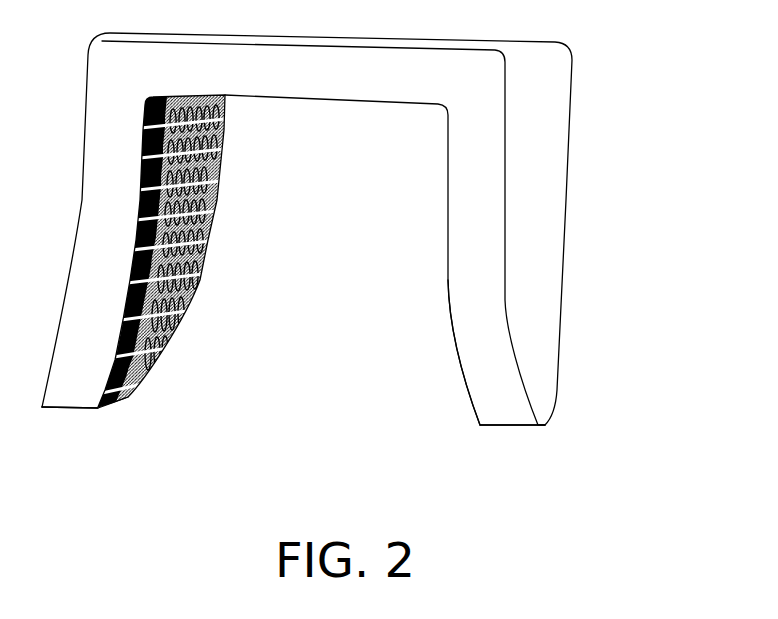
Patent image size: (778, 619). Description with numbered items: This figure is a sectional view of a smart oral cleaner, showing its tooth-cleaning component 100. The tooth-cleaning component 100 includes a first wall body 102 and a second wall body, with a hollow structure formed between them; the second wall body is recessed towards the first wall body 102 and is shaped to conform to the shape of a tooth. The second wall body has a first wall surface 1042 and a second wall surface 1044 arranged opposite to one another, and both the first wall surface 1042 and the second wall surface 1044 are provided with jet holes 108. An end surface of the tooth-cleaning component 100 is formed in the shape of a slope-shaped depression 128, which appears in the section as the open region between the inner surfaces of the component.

The tooth-cleaning component 100 is at (584, 190).
The first wall body 102 is at (537, 323).
The jet holes 108 is at (210, 228).
The slope-shaped depression 128 is at (297, 238).
The first wall surface 1042 is at (145, 363).
The second wall surface 1044 is at (467, 373).